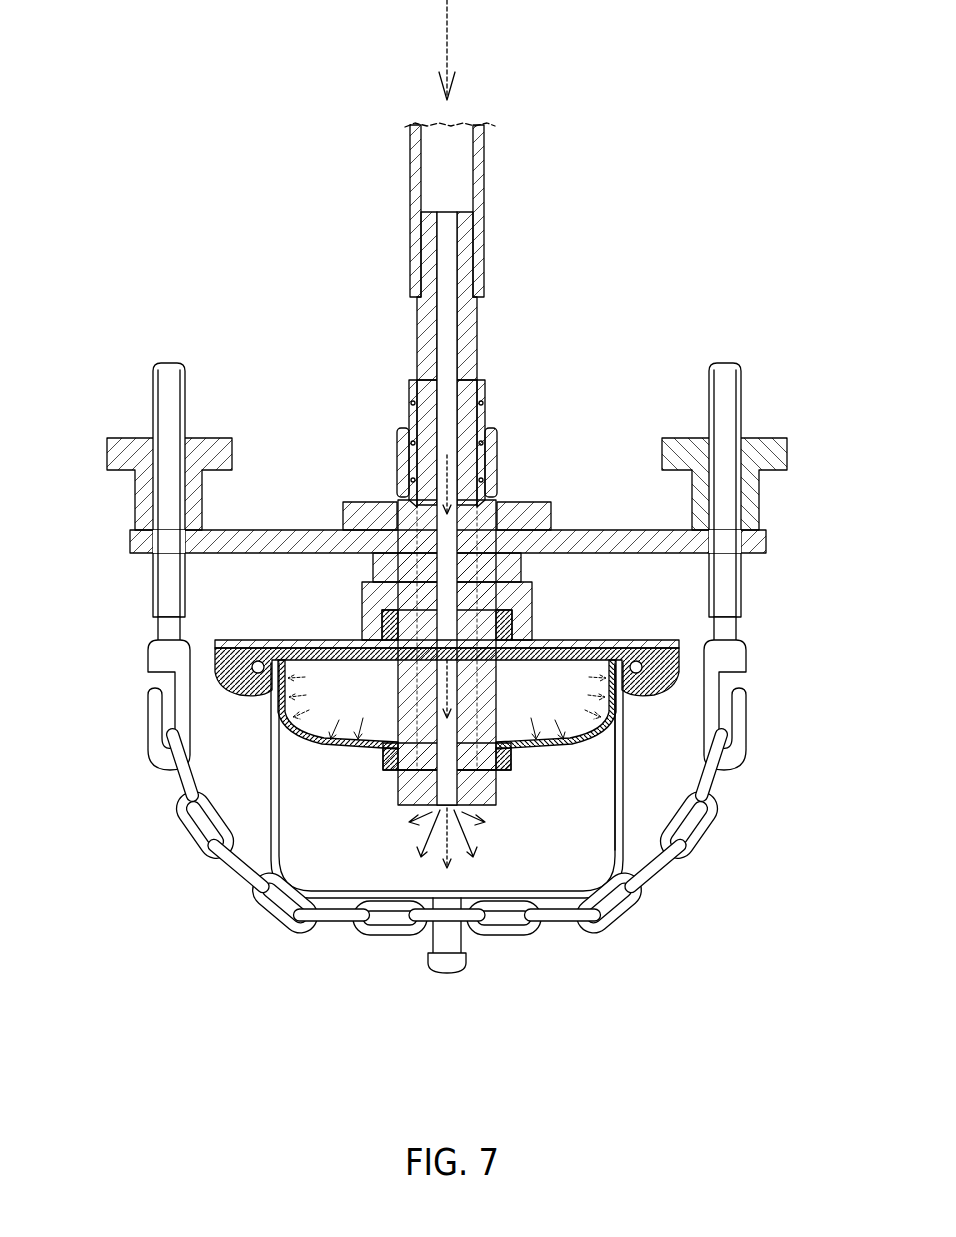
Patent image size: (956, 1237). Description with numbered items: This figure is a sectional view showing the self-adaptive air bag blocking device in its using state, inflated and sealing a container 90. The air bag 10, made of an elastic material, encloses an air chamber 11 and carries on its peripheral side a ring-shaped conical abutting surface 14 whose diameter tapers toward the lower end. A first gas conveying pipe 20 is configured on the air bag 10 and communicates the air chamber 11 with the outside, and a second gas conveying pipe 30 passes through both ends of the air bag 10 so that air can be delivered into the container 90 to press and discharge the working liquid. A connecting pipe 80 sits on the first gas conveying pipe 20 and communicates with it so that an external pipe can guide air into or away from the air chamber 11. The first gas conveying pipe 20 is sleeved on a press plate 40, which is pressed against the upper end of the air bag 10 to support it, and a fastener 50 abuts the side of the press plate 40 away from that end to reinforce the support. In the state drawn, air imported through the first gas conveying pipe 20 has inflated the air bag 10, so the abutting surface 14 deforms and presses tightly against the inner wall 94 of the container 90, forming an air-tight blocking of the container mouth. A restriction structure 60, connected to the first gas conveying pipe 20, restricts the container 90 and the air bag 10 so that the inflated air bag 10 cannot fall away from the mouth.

The air bag 10 is at (212, 660).
The air chamber 11 is at (291, 725).
The abutting surface 14 is at (615, 710).
The first gas conveying pipe 20 is at (484, 412).
The second gas conveying pipe 30 is at (478, 313).
The press plate 40 is at (247, 640).
The fastener 50 is at (532, 612).
The restriction structure 60 is at (187, 866).
The connecting pipe 80 is at (496, 465).
The container 90 is at (620, 857).
The inner wall 94 is at (585, 786).